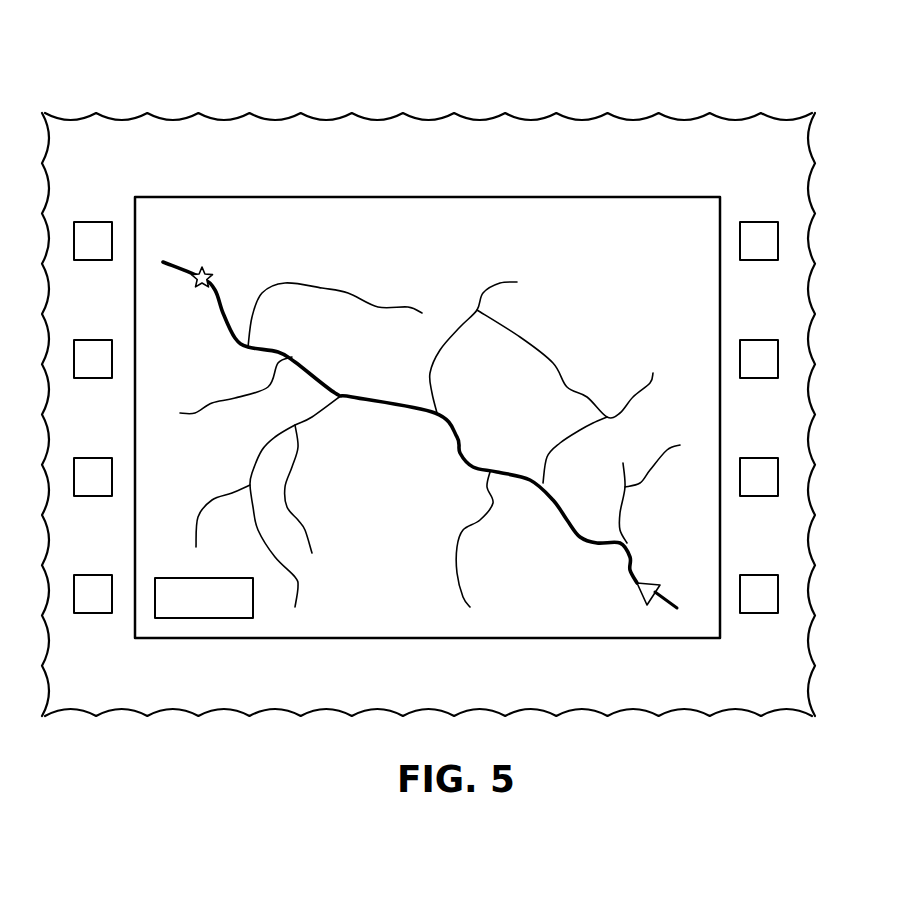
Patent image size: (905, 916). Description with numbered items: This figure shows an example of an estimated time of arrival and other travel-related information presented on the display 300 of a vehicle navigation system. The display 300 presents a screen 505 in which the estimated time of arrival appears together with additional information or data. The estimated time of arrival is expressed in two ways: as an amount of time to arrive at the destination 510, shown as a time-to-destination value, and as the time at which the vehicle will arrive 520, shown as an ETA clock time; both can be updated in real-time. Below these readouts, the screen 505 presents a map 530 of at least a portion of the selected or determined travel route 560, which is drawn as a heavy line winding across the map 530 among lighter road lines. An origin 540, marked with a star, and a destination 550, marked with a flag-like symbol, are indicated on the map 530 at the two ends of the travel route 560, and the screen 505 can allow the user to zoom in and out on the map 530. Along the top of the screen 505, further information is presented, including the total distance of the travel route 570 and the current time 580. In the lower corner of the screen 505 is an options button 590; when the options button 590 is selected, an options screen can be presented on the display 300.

The display 300 is at (712, 155).
The screen 505 is at (368, 195).
The amount of time to arrive at the destination 510 is at (612, 213).
The time at which the vehicle will arrive 520 is at (657, 272).
The map 530 is at (683, 337).
The origin 540 is at (208, 270).
The destination 550 is at (655, 585).
The travel route 560 is at (565, 520).
The total distance of the travel route 570 is at (240, 215).
The current time 580 is at (467, 213).
The options button 590 is at (212, 618).